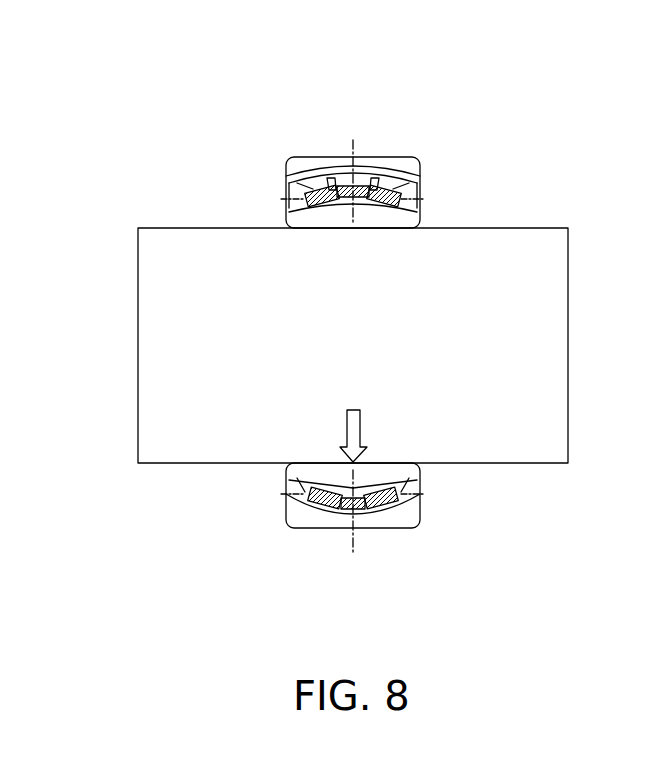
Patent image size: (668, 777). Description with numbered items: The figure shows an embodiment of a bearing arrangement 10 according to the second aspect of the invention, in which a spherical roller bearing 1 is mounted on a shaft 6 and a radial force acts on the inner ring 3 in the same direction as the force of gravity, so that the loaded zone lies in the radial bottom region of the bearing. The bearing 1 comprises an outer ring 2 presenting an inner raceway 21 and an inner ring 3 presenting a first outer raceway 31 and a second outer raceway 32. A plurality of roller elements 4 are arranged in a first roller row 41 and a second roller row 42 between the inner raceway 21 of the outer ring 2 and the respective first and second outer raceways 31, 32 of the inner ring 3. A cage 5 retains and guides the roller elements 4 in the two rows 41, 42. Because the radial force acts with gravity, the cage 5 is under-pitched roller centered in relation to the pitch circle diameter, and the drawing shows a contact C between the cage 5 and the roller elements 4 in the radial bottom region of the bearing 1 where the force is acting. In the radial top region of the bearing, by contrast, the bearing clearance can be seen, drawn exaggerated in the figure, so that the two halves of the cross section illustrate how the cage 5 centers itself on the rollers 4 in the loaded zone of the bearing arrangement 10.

The spherical roller bearing 1 is at (247, 104).
The bearing arrangement 10 is at (438, 146).
The outer ring 2 is at (380, 157).
The inner raceway 21 is at (405, 173).
The inner ring 3 is at (287, 463).
The first outer raceway 31 is at (287, 495).
The second outer raceway 32 is at (420, 495).
The roller elements 4 is at (356, 342).
The first roller row 41 is at (286, 176).
The second roller row 42 is at (420, 176).
The cage 5 is at (326, 186).
The shaft 6 is at (568, 348).
The contact C is at (323, 505).